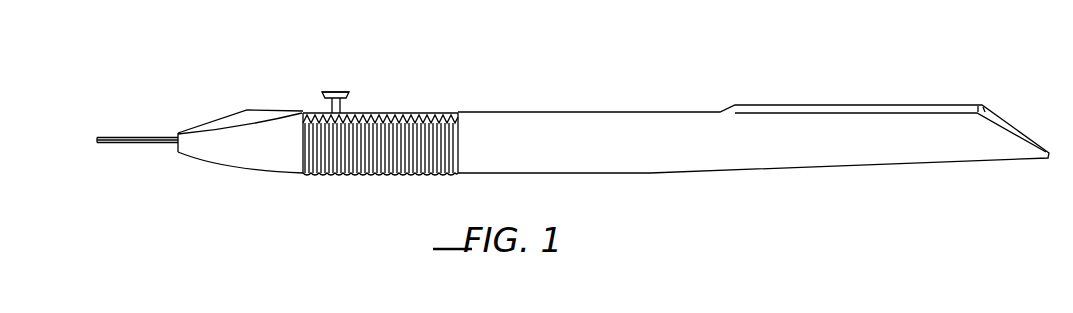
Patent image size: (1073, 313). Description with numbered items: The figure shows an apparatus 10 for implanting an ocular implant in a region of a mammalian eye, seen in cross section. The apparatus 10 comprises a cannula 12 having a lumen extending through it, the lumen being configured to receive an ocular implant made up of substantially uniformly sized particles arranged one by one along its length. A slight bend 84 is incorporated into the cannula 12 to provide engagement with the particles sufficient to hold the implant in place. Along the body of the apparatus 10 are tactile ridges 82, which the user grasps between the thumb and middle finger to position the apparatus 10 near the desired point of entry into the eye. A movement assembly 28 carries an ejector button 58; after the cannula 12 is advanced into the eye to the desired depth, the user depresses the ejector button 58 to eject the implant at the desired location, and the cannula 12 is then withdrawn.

The apparatus 10 is at (484, 69).
The cannula 12 is at (138, 136).
The movement assembly 28 is at (351, 86).
The ejector button 58 is at (330, 91).
The tactile ridges 82 is at (382, 175).
The slight bend 84 is at (97, 141).